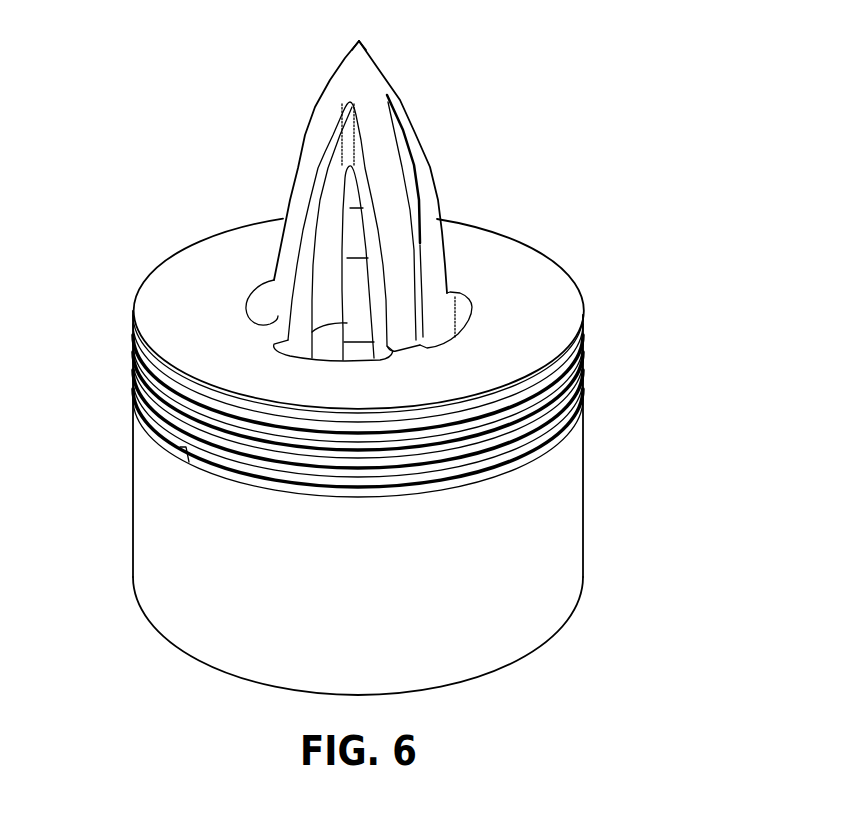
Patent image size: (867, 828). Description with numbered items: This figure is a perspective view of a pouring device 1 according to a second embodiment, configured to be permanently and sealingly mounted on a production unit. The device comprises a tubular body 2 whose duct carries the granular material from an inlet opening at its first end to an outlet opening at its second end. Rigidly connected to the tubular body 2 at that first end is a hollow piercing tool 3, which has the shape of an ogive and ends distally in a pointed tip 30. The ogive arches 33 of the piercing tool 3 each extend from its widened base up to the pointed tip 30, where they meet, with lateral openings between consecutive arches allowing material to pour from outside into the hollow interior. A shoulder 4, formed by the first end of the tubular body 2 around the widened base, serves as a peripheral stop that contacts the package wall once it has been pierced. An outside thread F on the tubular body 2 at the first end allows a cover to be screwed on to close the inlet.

The pouring device 1 is at (371, 353).
The tubular body 2 is at (562, 520).
The hollow piercing tool 3 is at (380, 186).
The pointed tip 30 is at (357, 40).
The ogive arches 33 is at (392, 213).
The shoulder 4 is at (530, 280).
The outside thread F is at (583, 355).